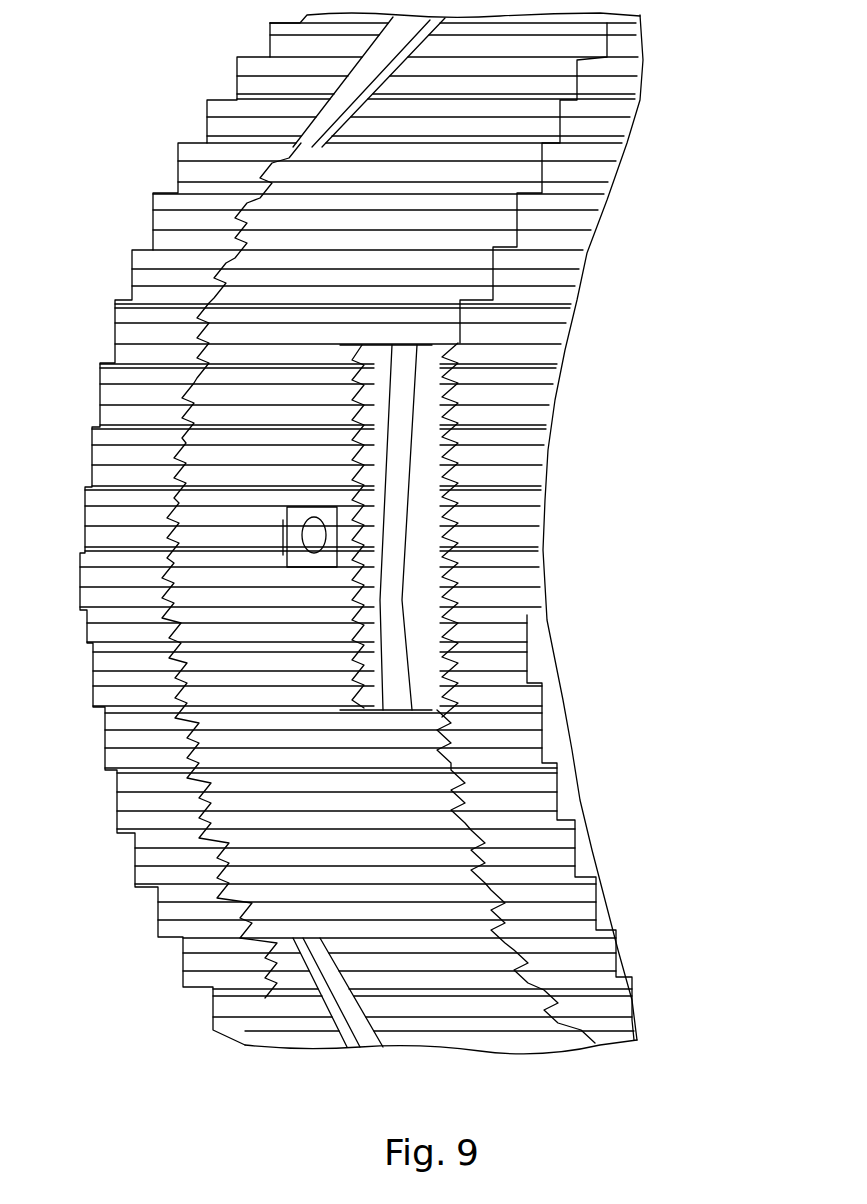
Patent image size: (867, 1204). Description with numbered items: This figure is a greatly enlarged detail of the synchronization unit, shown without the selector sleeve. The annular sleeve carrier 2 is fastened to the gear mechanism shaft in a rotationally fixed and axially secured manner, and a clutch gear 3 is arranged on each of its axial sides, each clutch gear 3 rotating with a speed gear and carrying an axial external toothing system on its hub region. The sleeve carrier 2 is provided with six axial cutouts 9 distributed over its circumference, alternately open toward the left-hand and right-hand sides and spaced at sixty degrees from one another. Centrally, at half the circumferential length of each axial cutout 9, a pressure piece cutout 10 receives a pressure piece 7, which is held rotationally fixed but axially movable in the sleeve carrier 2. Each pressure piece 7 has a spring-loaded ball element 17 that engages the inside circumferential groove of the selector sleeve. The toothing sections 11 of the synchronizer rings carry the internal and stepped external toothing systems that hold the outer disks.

The sleeve carrier 2 is at (397, 245).
The clutch gear 3 is at (163, 301).
The pressure piece 7 is at (293, 537).
The axial cutout 9 is at (348, 132).
The pressure piece cutout 10 is at (284, 512).
The toothing section 11 is at (372, 100).
The ball element 17 is at (320, 532).